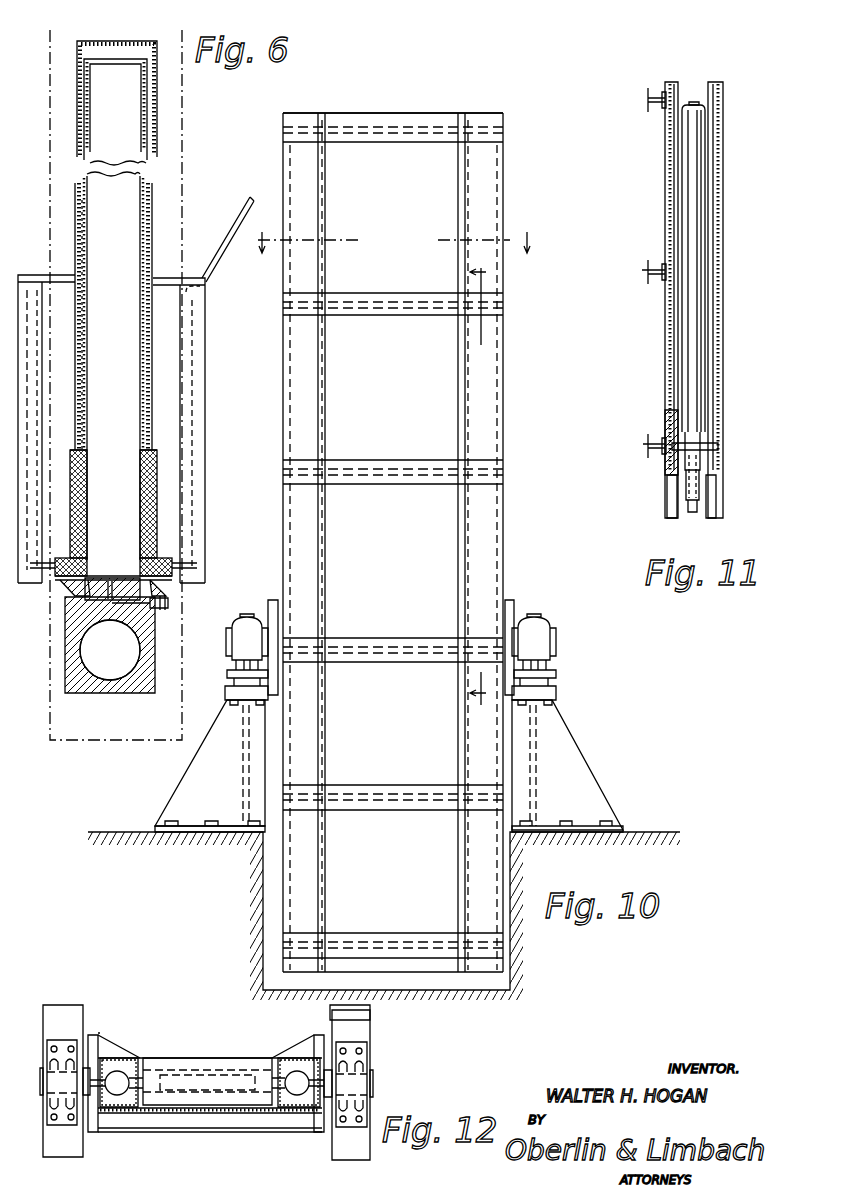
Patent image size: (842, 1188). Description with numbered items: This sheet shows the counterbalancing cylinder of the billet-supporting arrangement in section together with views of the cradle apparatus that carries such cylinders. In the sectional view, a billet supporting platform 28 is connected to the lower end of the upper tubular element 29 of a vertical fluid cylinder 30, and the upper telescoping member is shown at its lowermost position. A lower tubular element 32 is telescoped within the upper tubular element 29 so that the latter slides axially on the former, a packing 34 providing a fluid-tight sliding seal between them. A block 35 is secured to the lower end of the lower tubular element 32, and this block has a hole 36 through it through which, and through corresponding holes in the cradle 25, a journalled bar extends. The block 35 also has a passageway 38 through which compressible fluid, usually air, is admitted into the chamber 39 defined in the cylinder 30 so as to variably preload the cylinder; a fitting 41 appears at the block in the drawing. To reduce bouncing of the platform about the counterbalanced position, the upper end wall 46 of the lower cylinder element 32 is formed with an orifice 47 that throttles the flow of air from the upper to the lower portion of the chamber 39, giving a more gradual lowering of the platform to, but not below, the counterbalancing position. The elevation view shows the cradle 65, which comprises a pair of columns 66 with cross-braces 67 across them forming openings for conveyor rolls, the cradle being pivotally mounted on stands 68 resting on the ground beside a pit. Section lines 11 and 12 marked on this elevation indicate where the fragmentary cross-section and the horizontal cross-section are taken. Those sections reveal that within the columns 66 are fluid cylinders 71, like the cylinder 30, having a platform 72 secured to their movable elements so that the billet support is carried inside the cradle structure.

In FIG. 6, the cradle 25 is at (186, 135).
In FIG. 6, the billet supporting platform 28 is at (196, 274).
In FIG. 6, the upper tubular element 29 is at (155, 195).
In FIG. 6, the vertical fluid cylinder 30 is at (170, 228).
In FIG. 6, the lower tubular element 32 is at (139, 425).
In FIG. 6, the packing 34 is at (140, 514).
In FIG. 6, the block 35 is at (142, 693).
In FIG. 6, the hole 36 is at (110, 676).
In FIG. 6, the passageway 38 is at (122, 575).
In FIG. 6, the chamber 39 is at (130, 316).
In FIG. 6, the set screw 41 is at (160, 606).
In FIG. 6, the upper end wall 46 is at (136, 68).
In FIG. 6, the orifice 47 is at (114, 64).
In FIG. 10, the section line 11- 11 is at (481, 485).
In FIG. 10, the section line 12- 12 is at (396, 232).
In FIG. 10, the cradle 65 is at (516, 402).
In FIG. 11, the cradle 65 is at (655, 210).
In FIG. 12, the cradle 65 is at (130, 1027).
In FIG. 10, the column 66 is at (324, 378).
In FIG. 11, the column 66 is at (664, 345).
In FIG. 12, the column 66 is at (122, 1060).
In FIG. 10, the cross-brace 67 is at (378, 294).
In FIG. 11, the cross-brace 67 is at (647, 100).
In FIG. 12, the cross-brace 67 is at (216, 1132).
In FIG. 10, the stand 68 is at (183, 785).
In FIG. 12, the stand 68 is at (58, 1005).
In FIG. 11, the fluid cylinder 71 is at (698, 286).
In FIG. 12, the fluid cylinder 71 is at (120, 1095).
In FIG. 11, the platform 72 is at (718, 446).
In FIG. 12, the platform 72 is at (212, 1060).